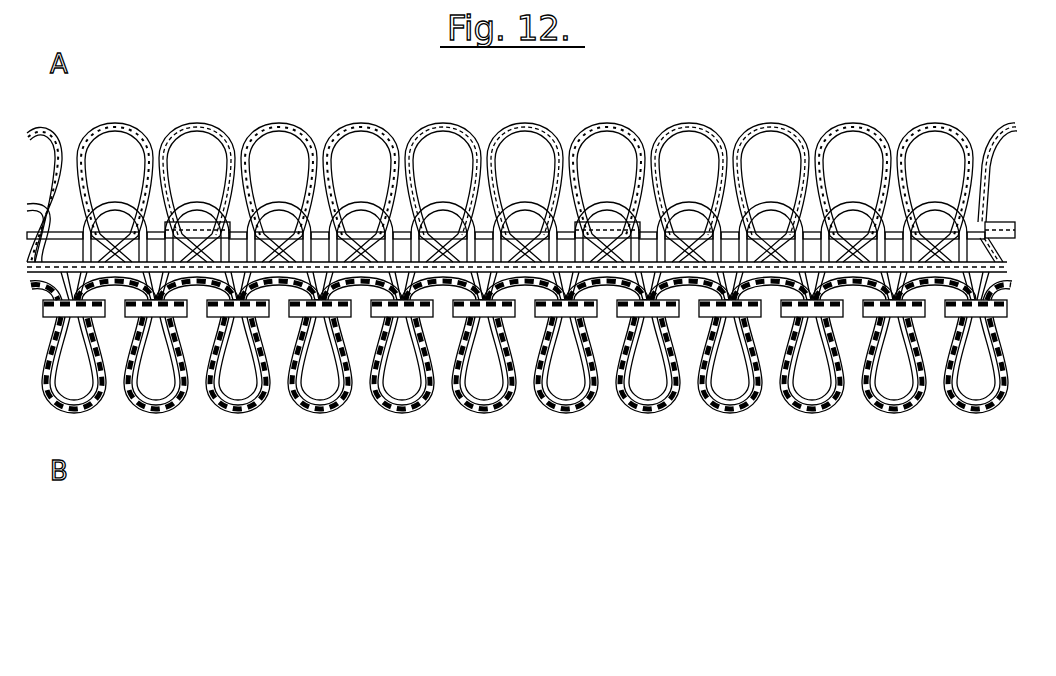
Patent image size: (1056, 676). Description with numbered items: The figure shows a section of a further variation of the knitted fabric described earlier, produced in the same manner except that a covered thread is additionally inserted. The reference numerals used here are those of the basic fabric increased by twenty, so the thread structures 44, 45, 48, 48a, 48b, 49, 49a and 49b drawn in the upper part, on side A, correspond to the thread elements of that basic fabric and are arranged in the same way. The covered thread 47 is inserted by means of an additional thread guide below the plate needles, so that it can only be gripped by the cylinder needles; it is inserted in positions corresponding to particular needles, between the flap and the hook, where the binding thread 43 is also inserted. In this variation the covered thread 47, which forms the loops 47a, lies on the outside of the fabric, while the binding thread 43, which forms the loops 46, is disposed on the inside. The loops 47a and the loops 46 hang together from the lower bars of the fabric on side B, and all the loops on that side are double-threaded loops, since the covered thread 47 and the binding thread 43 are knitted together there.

The binding thread 43 is at (38, 207).
The loop 44 is at (112, 200).
The yarn 45 is at (175, 125).
The loops 46 is at (68, 395).
The covered thread 47 is at (40, 287).
The loops 47a is at (128, 402).
The first thread 48 is at (36, 135).
The loop of first thread 48a is at (90, 135).
The tie bar of first thread 48b is at (192, 258).
The second thread 49 is at (37, 267).
The loop of second thread 49a is at (207, 125).
The crossing portion of second thread 49b is at (107, 262).